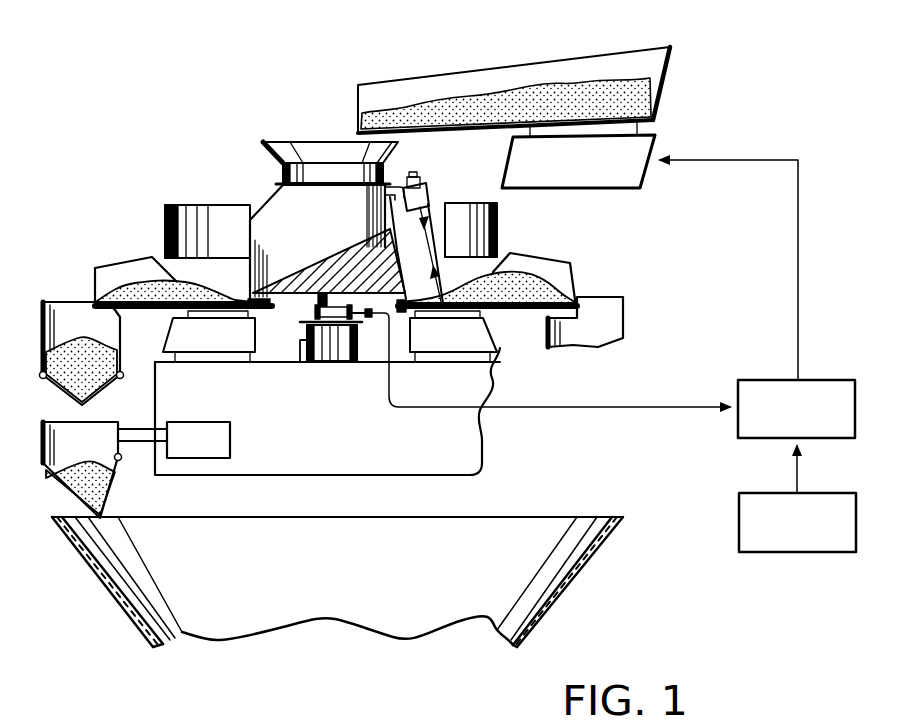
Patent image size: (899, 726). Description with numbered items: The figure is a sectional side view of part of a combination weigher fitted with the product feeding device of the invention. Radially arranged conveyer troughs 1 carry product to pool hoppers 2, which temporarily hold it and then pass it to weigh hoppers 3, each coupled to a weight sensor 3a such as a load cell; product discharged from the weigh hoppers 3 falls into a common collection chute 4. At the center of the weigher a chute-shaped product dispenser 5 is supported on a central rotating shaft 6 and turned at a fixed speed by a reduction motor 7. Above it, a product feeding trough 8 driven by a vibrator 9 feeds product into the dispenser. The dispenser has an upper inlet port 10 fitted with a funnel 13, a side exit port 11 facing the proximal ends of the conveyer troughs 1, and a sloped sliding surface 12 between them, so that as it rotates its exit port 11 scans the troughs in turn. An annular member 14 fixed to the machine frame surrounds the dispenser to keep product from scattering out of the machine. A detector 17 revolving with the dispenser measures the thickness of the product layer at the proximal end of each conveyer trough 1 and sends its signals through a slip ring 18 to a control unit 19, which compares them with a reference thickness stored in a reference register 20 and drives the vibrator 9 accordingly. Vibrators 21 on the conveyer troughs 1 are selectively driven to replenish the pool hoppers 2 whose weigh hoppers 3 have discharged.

The conveyer trough 1 is at (117, 264).
The pool hopper 2 is at (48, 299).
The weigh hopper 3 is at (41, 422).
The weight sensor 3a is at (228, 440).
The collection chute 4 is at (101, 580).
The product dispenser 5 is at (277, 193).
The central rotating shaft 6 is at (325, 352).
The reduction motor 7 is at (305, 350).
The product feeding trough 8 is at (515, 80).
The vibrator 9 is at (600, 184).
The inlet port 10 is at (322, 192).
The exit port 11 is at (249, 277).
The sloped sliding surface 12 is at (329, 254).
The funnel 13 is at (278, 141).
The annular member 14 is at (184, 204).
The detector 17 is at (427, 194).
The slip ring 18 is at (315, 316).
The control unit 19 is at (758, 380).
The reference register 20 is at (752, 493).
The vibrator 21 is at (218, 345).